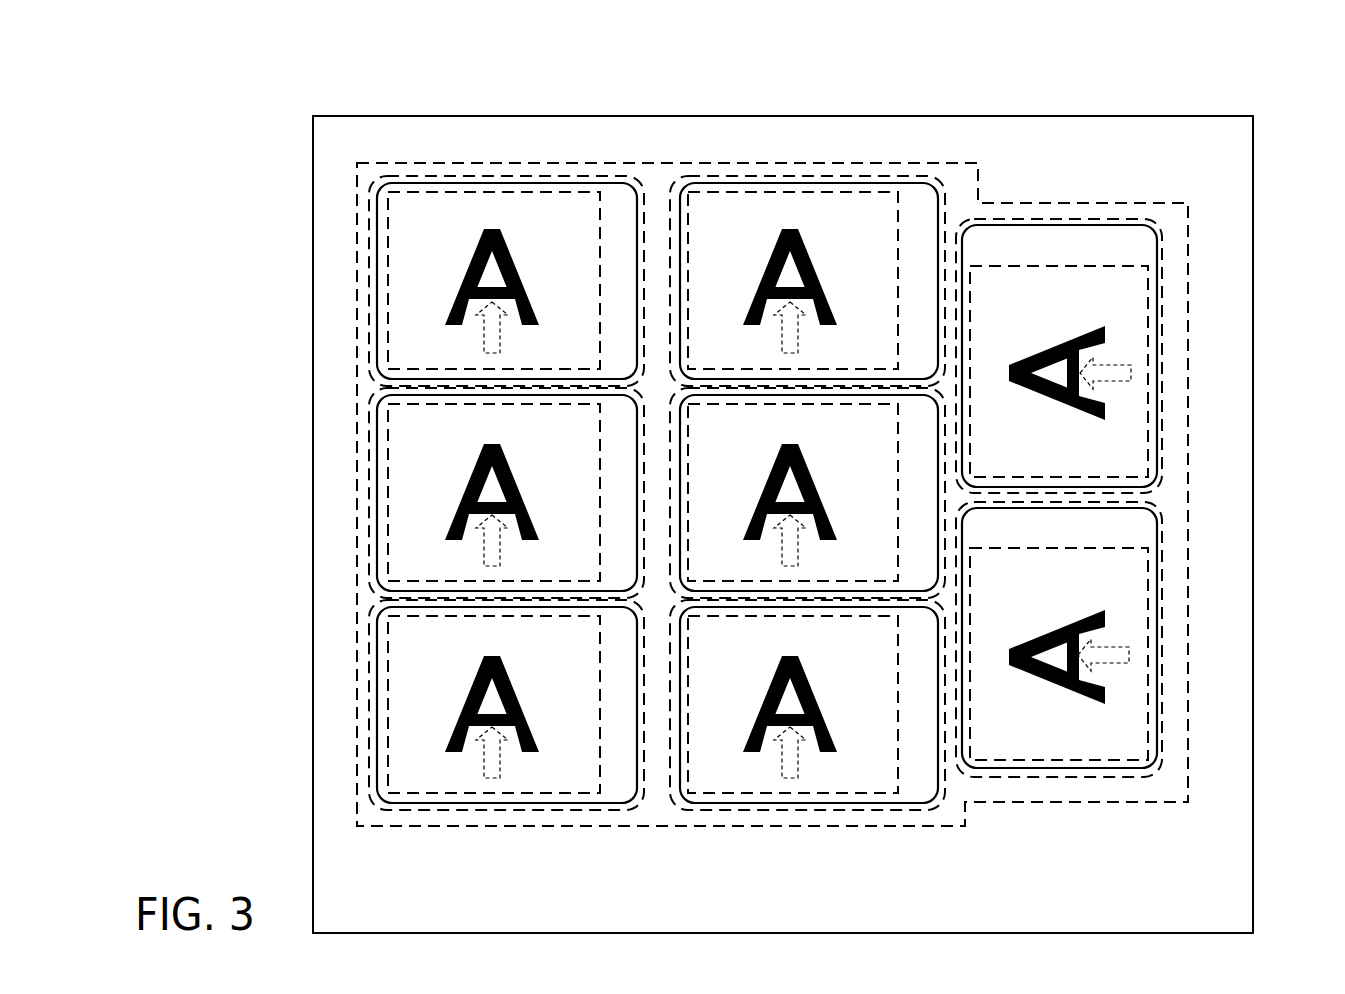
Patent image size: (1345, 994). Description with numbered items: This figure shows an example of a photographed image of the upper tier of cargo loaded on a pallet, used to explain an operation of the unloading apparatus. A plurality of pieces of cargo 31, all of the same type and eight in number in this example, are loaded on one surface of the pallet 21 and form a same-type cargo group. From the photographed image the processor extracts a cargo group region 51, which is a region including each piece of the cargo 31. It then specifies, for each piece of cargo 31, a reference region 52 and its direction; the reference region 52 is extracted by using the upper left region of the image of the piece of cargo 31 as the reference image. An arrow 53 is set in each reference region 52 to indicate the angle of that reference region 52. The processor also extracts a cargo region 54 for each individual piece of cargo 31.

The pallet 21 is at (880, 116).
The cargo 31 is at (377, 230).
The cargo group region 51 is at (697, 163).
The reference region 52 is at (428, 190).
The arrow 53 is at (482, 342).
The cargo region 54 is at (556, 176).